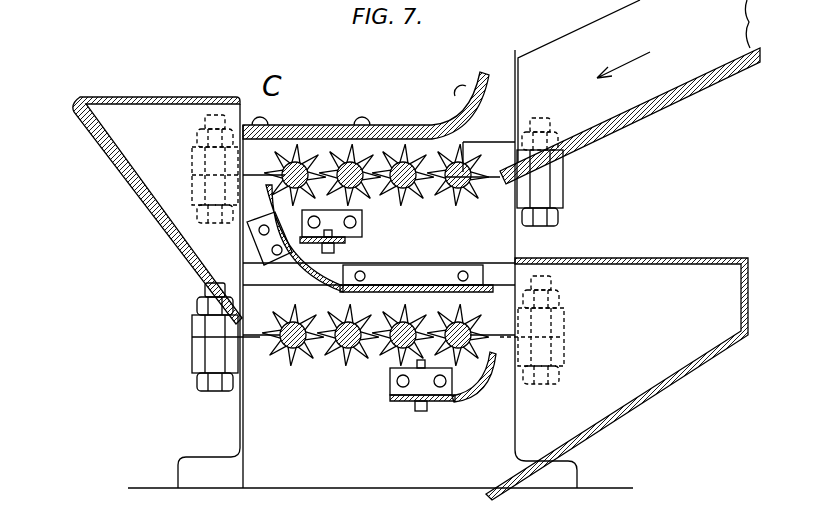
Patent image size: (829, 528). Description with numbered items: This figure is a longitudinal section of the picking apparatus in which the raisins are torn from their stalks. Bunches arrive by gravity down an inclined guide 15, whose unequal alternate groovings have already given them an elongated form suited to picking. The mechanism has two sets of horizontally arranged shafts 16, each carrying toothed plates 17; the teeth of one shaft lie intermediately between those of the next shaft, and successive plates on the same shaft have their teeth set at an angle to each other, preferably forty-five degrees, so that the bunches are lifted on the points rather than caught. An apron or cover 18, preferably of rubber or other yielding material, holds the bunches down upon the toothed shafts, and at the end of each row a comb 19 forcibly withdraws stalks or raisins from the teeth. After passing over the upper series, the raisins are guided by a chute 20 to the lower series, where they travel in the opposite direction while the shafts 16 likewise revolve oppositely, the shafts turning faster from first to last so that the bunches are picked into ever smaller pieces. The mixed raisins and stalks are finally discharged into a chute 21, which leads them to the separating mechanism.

The guide 15 is at (630, 92).
The shafts 16 is at (463, 192).
The toothed plates 17 is at (436, 205).
The apron or cover 18 is at (400, 128).
The comb 19 is at (280, 192).
The chute 20 is at (157, 210).
The chute 21 is at (617, 379).